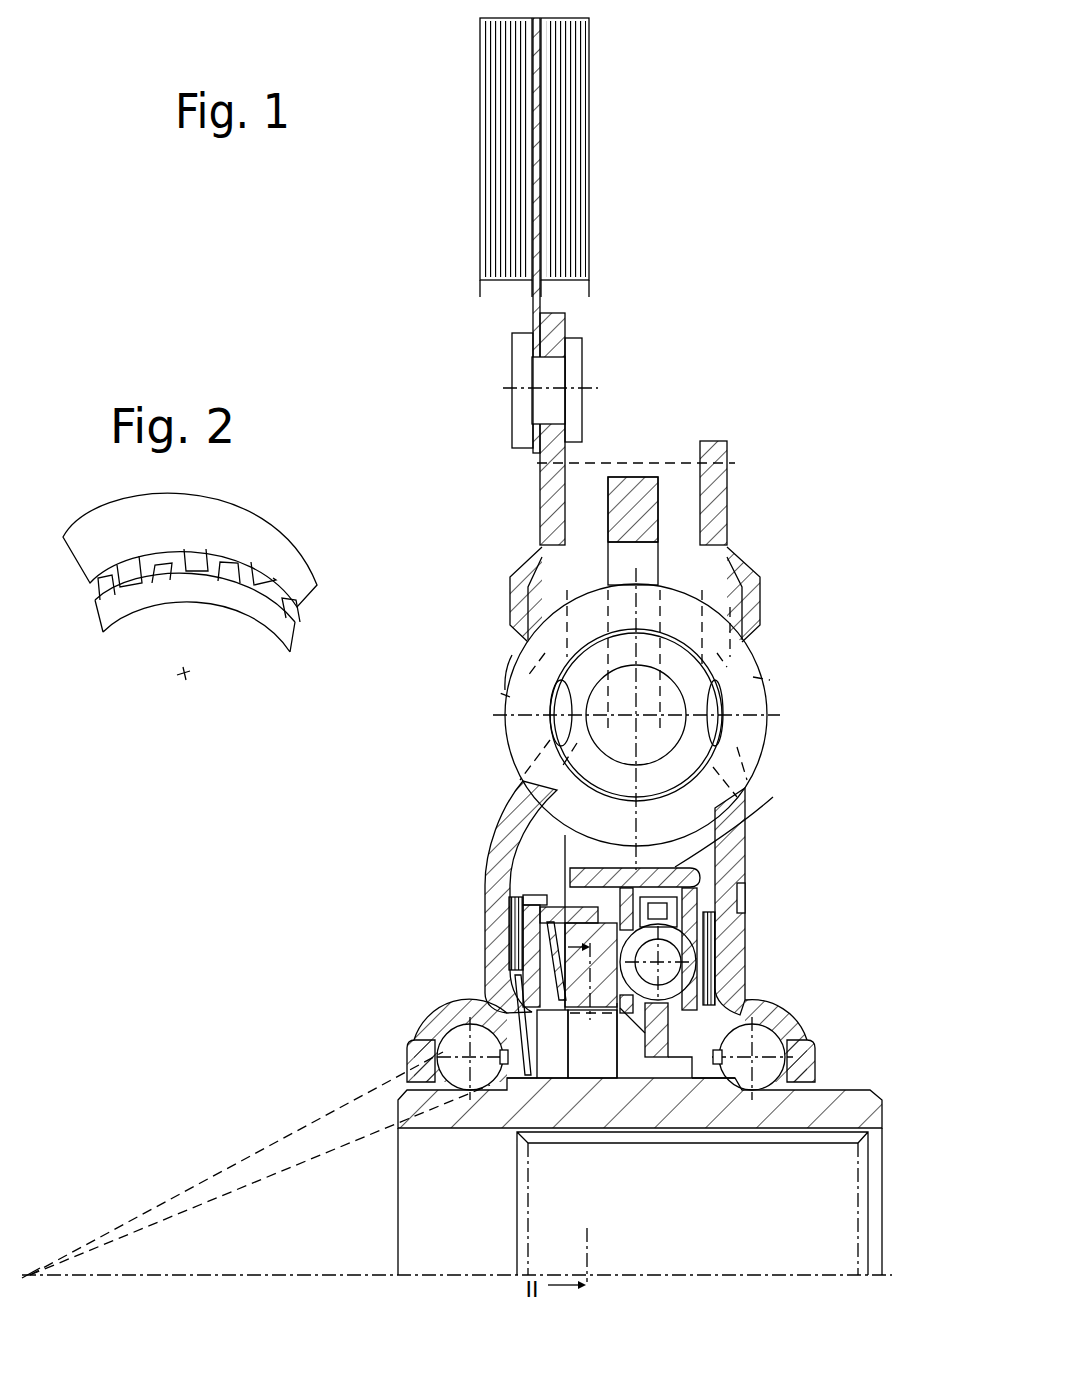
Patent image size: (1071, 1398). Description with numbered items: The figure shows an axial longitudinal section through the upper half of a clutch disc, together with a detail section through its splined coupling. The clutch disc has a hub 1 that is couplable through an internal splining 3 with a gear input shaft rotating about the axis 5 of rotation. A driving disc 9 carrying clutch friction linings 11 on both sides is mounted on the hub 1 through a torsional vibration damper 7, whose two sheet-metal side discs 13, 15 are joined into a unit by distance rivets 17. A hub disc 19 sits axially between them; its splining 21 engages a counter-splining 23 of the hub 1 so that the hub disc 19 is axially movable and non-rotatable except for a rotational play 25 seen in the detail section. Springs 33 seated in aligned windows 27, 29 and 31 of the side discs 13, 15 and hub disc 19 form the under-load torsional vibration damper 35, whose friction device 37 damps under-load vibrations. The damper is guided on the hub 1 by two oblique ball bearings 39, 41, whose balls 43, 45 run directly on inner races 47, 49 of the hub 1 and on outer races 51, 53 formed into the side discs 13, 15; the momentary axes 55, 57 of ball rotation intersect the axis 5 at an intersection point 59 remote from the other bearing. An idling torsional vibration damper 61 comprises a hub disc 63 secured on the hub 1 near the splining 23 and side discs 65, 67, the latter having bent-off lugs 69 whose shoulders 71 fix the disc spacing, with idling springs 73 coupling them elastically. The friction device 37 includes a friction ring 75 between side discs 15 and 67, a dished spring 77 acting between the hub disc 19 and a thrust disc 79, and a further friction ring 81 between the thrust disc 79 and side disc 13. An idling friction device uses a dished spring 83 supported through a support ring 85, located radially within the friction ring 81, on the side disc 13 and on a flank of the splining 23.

In FIG. 1, the hub 1 is at (727, 1117).
In FIG. 2, the hub 1 is at (258, 618).
In FIG. 1, the internal splining 3 is at (818, 1137).
In FIG. 2, the internal splining 3 is at (207, 607).
In FIG. 1, the axis of rotation 5 is at (722, 1276).
In FIG. 2, the axis of rotation 5 is at (185, 673).
In FIG. 1, the torsional vibration damper 7 is at (620, 330).
In FIG. 1, the driving disc 9 is at (537, 292).
In FIG. 1, the clutch friction linings 11 is at (558, 100).
In FIG. 1, the side disc 13 is at (542, 490).
In FIG. 1, the side disc 15 is at (717, 483).
In FIG. 1, the distance rivets 17 is at (600, 463).
In FIG. 1, the hub disc 19 is at (630, 484).
In FIG. 2, the hub disc 19 is at (232, 520).
In FIG. 1, the splining 21 is at (600, 1065).
In FIG. 2, the splining 21 is at (165, 563).
In FIG. 1, the counter-splining 23 is at (553, 1062).
In FIG. 2, the counter-splining 23 is at (127, 585).
In FIG. 2, the rotational play 25 is at (140, 570).
In FIG. 1, the window 27 is at (513, 693).
In FIG. 1, the window 29 is at (757, 680).
In FIG. 1, the window 31 is at (650, 548).
In FIG. 1, the springs 33 is at (510, 670).
In FIG. 1, the torsional vibration damper 35 is at (629, 711).
In FIG. 1, the friction device 37 is at (476, 855).
In FIG. 1, the oblique ball bearing 39 is at (433, 1068).
In FIG. 1, the oblique ball bearing 41 is at (774, 1076).
In FIG. 1, the ball 43 is at (445, 1033).
In FIG. 1, the ball 45 is at (800, 1068).
In FIG. 1, the inner race 47 is at (490, 1088).
In FIG. 1, the inner race 49 is at (738, 1093).
In FIG. 1, the outer race 51 is at (470, 1002).
In FIG. 1, the outer race 53 is at (792, 1024).
In FIG. 1, the momentary axis of rotation 55 is at (122, 1222).
In FIG. 1, the momentary axis of rotation 57 is at (197, 1208).
In FIG. 1, the intersection point 59 is at (32, 1272).
In FIG. 1, the idling torsional vibration damper 61 is at (639, 918).
In FIG. 1, the hub disc 63 is at (667, 1032).
In FIG. 1, the side disc 65 is at (762, 880).
In FIG. 1, the side disc 67 is at (712, 898).
In FIG. 1, the lugs 69 is at (563, 867).
In FIG. 1, the shoulders 71 is at (637, 866).
In FIG. 1, the springs 73 is at (688, 972).
In FIG. 1, the friction ring 75 is at (715, 924).
In FIG. 1, the dished spring 77 is at (510, 953).
In FIG. 1, the thrust disc 79 is at (522, 918).
In FIG. 1, the friction ring 81 is at (510, 898).
In FIG. 1, the dished spring 83 is at (407, 1045).
In FIG. 1, the support ring 85 is at (486, 1013).